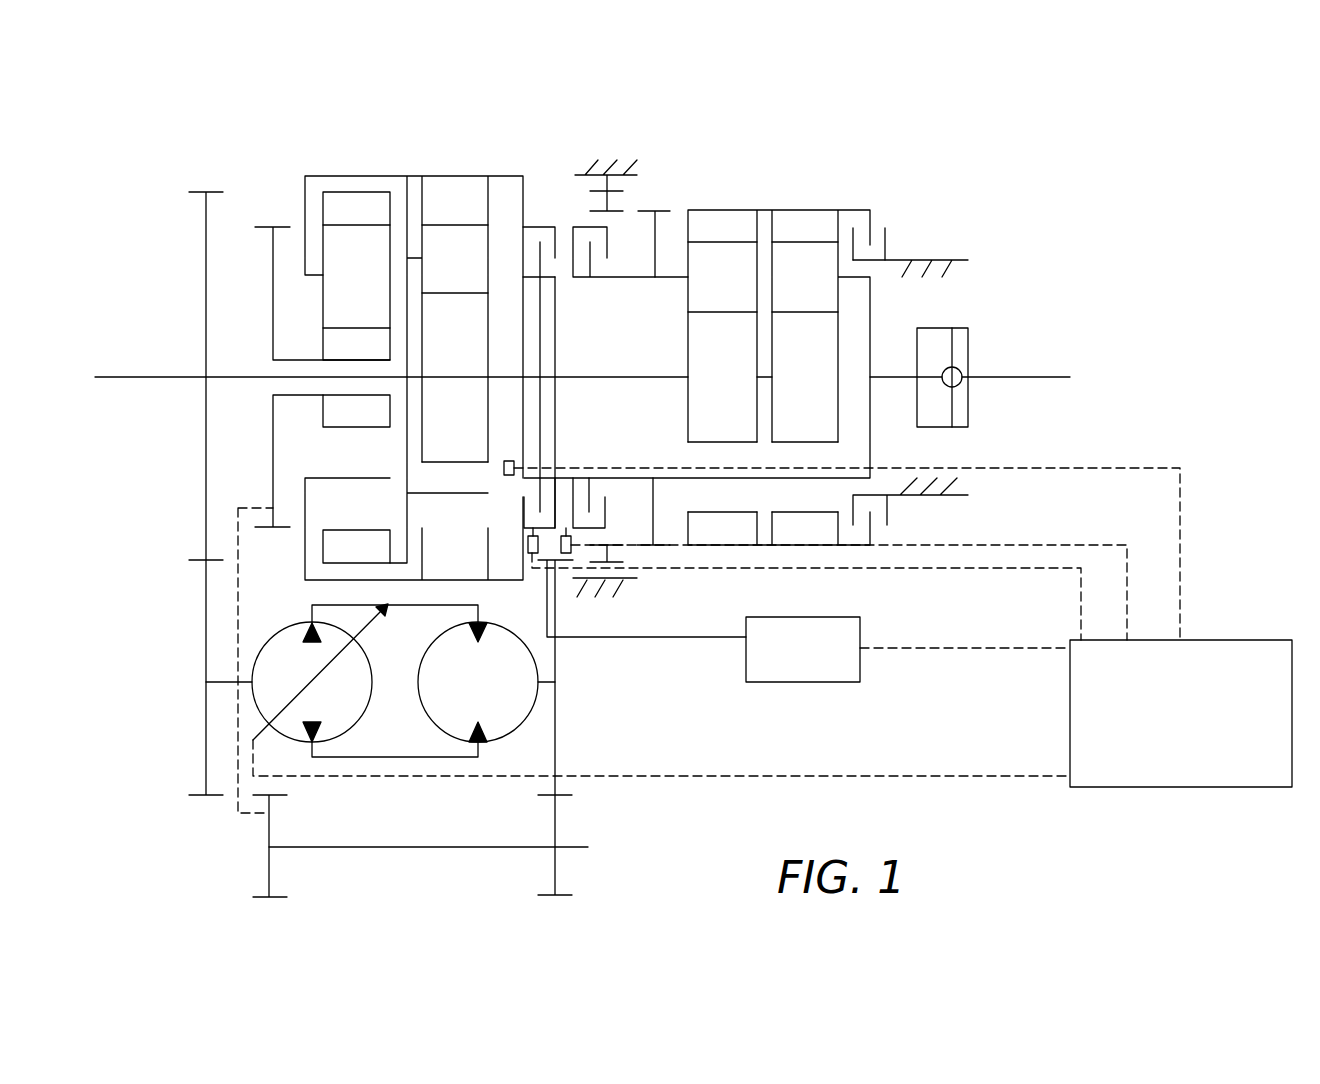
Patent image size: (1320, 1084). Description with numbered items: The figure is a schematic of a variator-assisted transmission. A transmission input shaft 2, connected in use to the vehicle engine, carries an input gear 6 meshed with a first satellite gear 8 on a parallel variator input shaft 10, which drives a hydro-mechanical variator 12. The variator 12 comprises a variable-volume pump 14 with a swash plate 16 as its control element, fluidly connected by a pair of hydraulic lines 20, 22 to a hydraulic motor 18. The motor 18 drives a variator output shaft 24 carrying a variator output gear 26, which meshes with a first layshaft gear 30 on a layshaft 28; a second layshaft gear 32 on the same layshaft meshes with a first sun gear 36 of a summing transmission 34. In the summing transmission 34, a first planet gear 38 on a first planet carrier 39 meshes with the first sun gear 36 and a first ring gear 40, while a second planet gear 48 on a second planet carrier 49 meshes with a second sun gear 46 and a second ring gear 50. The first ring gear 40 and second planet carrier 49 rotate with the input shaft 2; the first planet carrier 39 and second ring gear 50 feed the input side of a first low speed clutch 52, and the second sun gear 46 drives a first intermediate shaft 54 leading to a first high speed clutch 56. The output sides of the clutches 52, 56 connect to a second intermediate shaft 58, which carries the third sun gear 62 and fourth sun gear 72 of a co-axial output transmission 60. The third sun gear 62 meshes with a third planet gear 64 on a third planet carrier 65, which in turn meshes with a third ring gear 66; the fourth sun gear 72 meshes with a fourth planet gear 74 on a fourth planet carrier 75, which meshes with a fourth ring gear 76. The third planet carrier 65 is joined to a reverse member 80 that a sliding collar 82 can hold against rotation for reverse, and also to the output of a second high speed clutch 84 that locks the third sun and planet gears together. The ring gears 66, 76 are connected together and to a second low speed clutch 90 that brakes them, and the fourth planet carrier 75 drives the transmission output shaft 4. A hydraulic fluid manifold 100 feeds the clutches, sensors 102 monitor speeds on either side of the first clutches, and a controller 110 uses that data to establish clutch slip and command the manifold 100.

The transmission input shaft 2 is at (129, 380).
The transmission output shaft 4 is at (1038, 379).
The input gear 6 is at (206, 268).
The first satellite gear 8 is at (206, 650).
The variator input shaft 10 is at (206, 688).
The hydro-mechanical variator 12 is at (397, 738).
The variable-volume pump 14 is at (292, 625).
The swash plate 16 is at (333, 660).
The hydraulic motor 18 is at (508, 735).
The hydraulic line 20 is at (410, 605).
The hydraulic line 22 is at (445, 757).
The variator output shaft 24 is at (556, 690).
The variator output gear 26 is at (556, 655).
The layshaft 28 is at (510, 848).
The first layshaft gear 30 is at (556, 815).
The second layshaft gear 32 is at (269, 870).
The summing transmission 34 is at (417, 162).
The first sun gear 36 is at (328, 428).
The first planet gear 38 is at (333, 238).
The first planet carrier 39 is at (307, 274).
The first ring gear 40 is at (377, 202).
The second sun gear 46 is at (466, 386).
The second planet gear 48 is at (466, 268).
The second planet carrier 49 is at (423, 258).
The second ring gear 50 is at (474, 185).
The first low speed clutch 52 is at (537, 227).
The first intermediate shaft 54 is at (517, 380).
The first high speed clutch 56 is at (560, 282).
The second intermediate shaft 58 is at (648, 377).
The output transmission 60 is at (760, 200).
The third sun gear 62 is at (690, 418).
The third planet gear 64 is at (736, 283).
The third planet carrier 65 is at (672, 277).
The third ring gear 66 is at (707, 218).
The fourth sun gear 72 is at (819, 386).
The fourth planet gear 74 is at (819, 283).
The fourth planet carrier 75 is at (873, 260).
The fourth ring gear 76 is at (822, 218).
The reverse member 80 is at (653, 525).
The sliding collar 82 is at (606, 192).
The second high speed clutch 84 is at (591, 490).
The second low speed clutch 90 is at (868, 210).
The hydraulic fluid manifold 100 is at (835, 683).
The sensors 102 is at (566, 536).
The controller 110 is at (1265, 788).